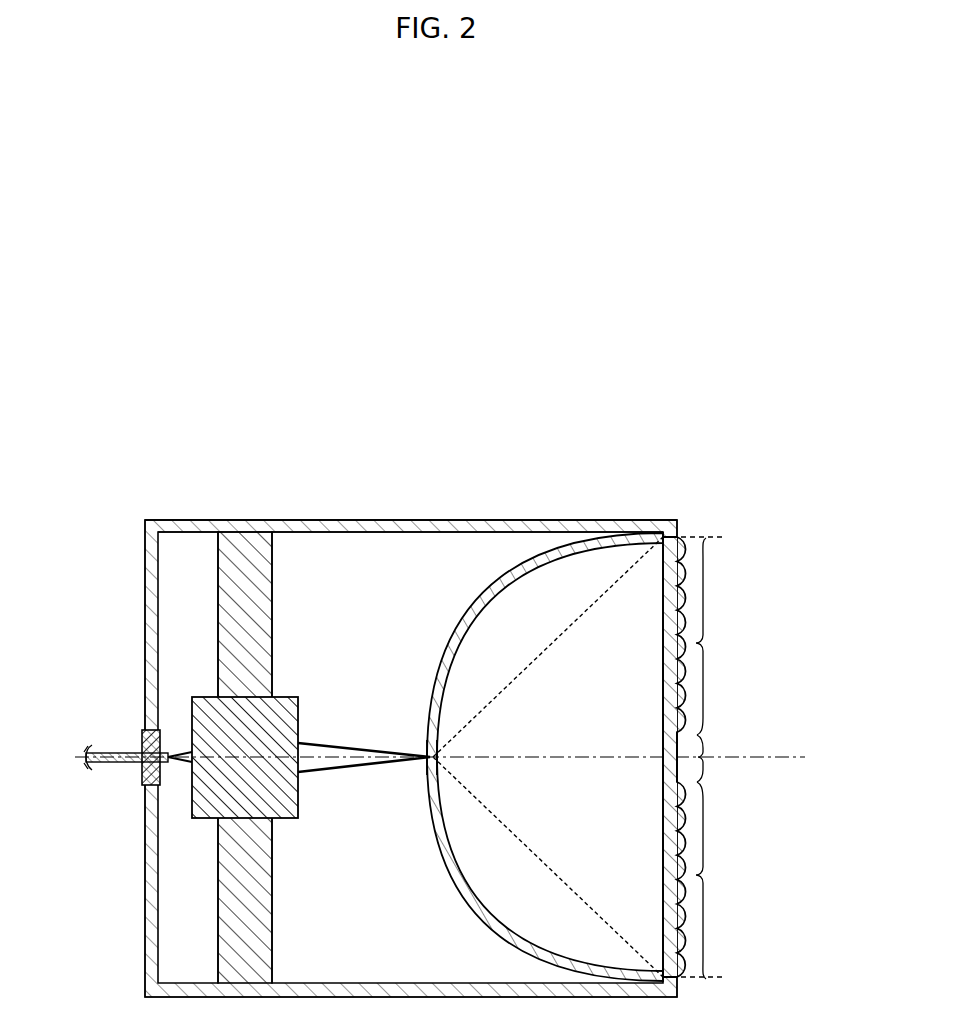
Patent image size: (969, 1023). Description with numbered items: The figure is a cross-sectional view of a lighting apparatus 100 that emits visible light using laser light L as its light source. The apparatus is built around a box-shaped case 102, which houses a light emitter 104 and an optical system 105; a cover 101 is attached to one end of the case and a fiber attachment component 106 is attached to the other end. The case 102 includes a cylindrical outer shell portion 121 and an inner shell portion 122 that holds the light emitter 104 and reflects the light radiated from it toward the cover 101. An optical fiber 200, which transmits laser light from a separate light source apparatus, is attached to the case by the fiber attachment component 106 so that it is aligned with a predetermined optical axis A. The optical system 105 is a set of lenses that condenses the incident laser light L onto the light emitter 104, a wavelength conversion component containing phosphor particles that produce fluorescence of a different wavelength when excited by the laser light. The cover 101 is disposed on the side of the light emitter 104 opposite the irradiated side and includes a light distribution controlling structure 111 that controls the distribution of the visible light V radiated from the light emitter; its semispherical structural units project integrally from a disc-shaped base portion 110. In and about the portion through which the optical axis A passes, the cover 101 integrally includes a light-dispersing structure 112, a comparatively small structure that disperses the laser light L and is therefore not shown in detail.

The lighting apparatus 100 is at (621, 406).
The cover 101 is at (663, 612).
The case 102 is at (192, 520).
The light emitter 104 is at (430, 737).
The optical system 105 is at (289, 697).
The fiber attachment component 106 is at (143, 735).
The base portion 110 is at (663, 692).
The light distribution controlling structure 111 is at (706, 643).
The light-dispersing structure 112 is at (705, 758).
The outer shell portion 121 is at (402, 520).
The inner shell portion 122 is at (476, 592).
The optical fiber 200 is at (110, 765).
The laser light L is at (342, 748).
The optical axis A is at (782, 757).
The visible light V is at (573, 622).